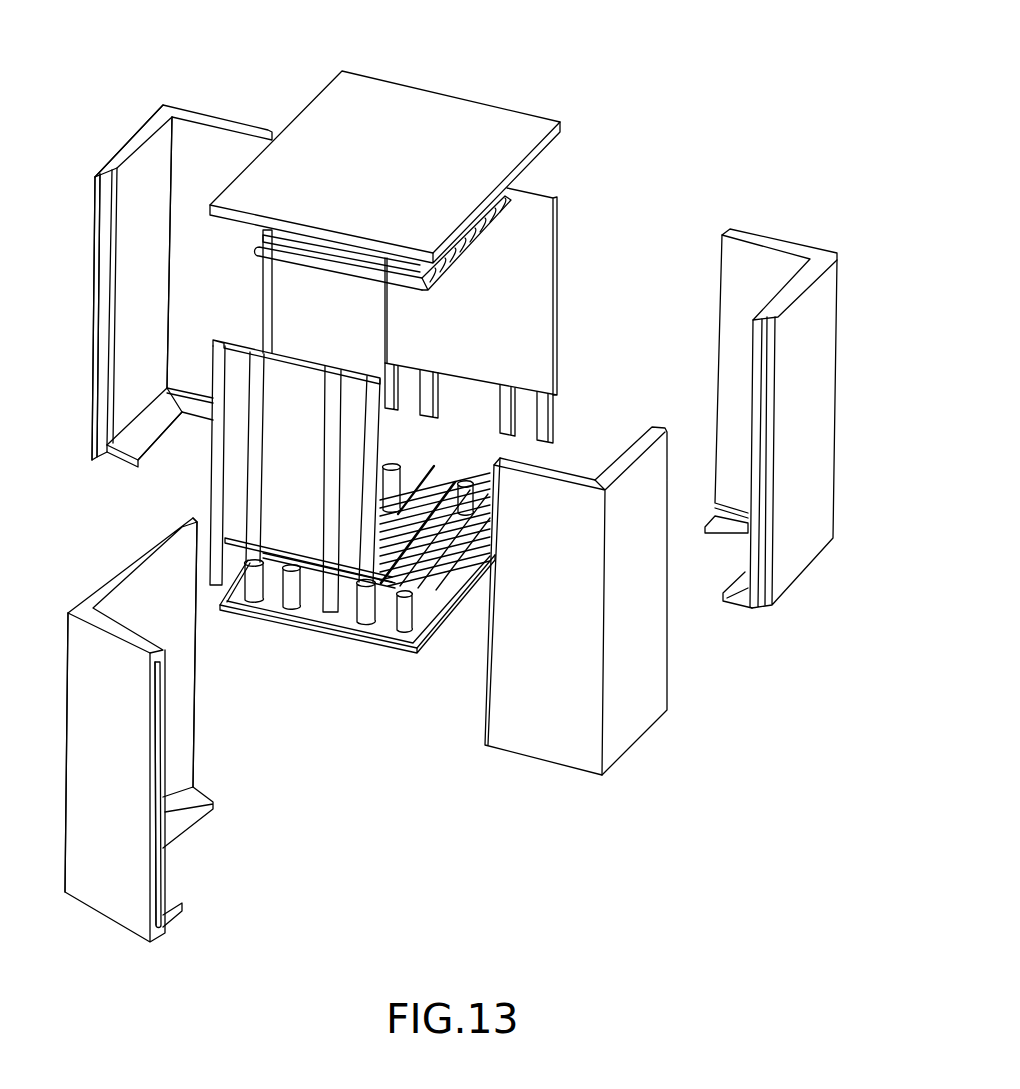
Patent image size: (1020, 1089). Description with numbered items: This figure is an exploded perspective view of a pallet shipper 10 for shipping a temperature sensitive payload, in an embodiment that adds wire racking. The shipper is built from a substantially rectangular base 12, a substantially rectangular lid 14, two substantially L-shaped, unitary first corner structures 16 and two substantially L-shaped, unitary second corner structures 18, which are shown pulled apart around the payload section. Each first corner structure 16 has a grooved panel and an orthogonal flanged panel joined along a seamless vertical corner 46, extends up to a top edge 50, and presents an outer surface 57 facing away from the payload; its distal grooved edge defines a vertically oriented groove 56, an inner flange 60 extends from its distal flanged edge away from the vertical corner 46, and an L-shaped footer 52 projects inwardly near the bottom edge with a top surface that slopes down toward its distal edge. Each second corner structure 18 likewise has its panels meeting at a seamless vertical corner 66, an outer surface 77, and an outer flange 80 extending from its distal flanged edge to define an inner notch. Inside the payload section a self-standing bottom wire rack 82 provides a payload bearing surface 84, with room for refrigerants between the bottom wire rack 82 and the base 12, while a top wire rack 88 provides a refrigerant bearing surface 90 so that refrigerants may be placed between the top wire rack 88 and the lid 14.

The pallet shipper 10 is at (806, 92).
The base 12 is at (337, 622).
The lid 14 is at (487, 140).
The first corner structure 16 is at (132, 898).
The second corner structure 18 is at (143, 180).
The vertical corner 46 is at (63, 628).
The top edge 50 is at (165, 112).
The footer 52 is at (142, 437).
The groove 56 is at (160, 878).
The outer surface 57 is at (818, 495).
The inner flange 60 is at (180, 522).
The vertical corner 66 is at (173, 178).
The outer surface 77 is at (647, 695).
The outer flange 80 is at (100, 270).
The bottom wire rack 82 is at (440, 590).
The payload bearing surface 84 is at (433, 480).
The top wire rack 88 is at (424, 286).
The refrigerant bearing surface 90 is at (348, 253).